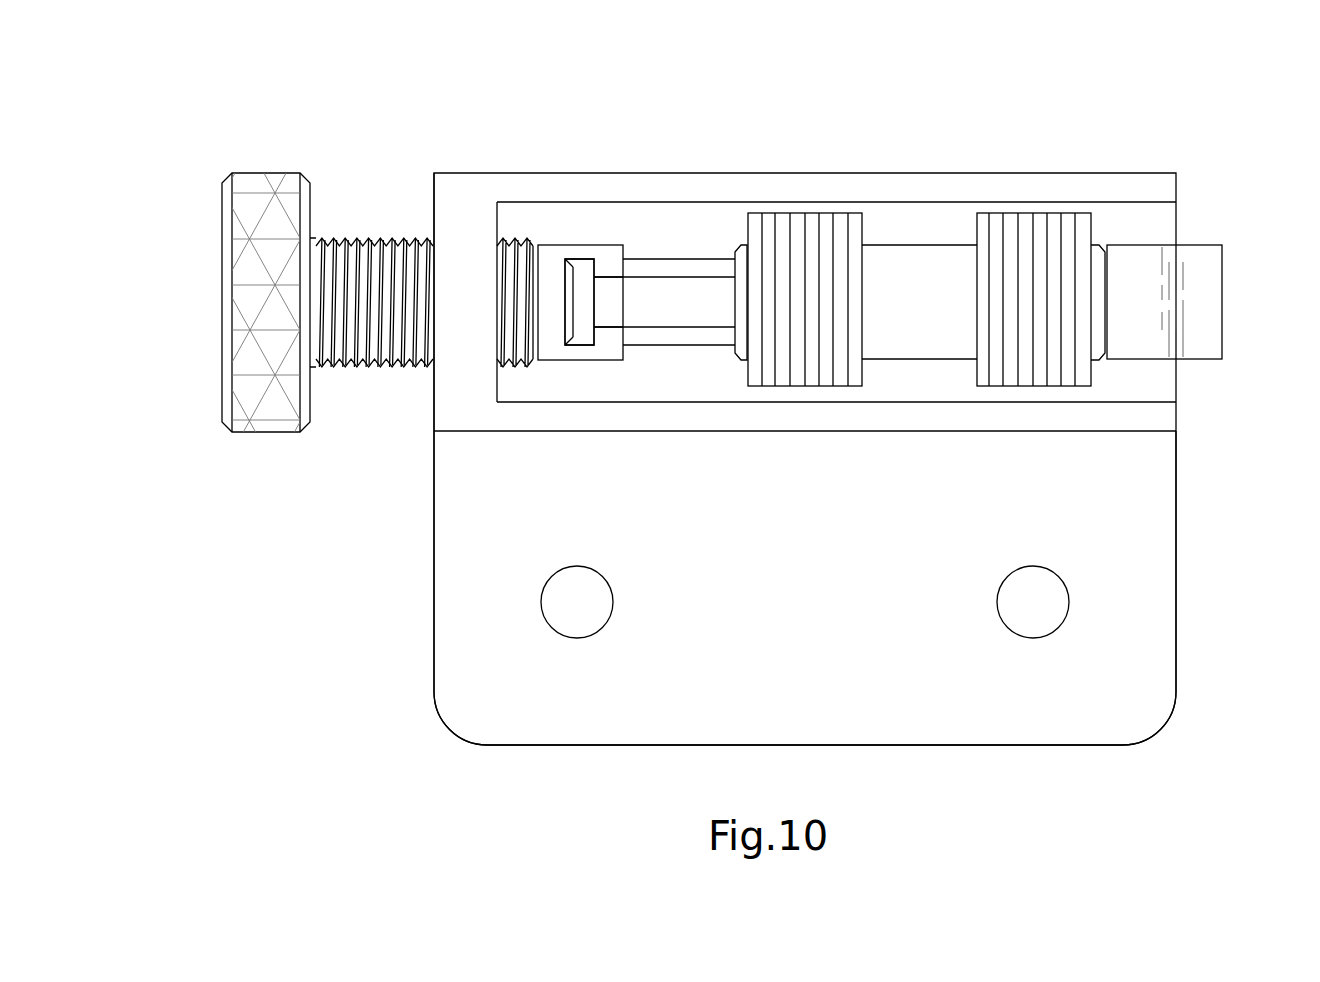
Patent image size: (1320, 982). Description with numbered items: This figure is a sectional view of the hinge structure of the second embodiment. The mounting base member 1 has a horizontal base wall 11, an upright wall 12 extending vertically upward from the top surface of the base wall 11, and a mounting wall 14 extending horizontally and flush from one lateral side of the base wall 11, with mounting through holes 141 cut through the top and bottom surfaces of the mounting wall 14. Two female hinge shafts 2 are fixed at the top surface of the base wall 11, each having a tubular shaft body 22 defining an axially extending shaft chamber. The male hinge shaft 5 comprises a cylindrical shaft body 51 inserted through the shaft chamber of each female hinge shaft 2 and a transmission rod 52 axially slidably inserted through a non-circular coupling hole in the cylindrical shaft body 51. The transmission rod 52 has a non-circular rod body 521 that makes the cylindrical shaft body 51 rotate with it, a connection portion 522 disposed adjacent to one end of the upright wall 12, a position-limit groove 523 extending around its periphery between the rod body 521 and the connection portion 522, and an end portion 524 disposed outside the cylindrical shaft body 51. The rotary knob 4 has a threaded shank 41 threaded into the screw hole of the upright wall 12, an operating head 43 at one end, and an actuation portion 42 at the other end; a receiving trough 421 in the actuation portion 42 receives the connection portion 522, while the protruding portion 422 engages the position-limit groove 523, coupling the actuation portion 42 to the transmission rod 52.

The mounting base member 1 is at (428, 560).
The horizontal base wall 11 is at (1165, 380).
The upright wall 12 is at (444, 233).
The mounting wall 14 is at (1150, 497).
The mounting through hole 141 is at (602, 627).
The female hinge shaft 2 is at (942, 246).
The tubular shaft body 22 is at (843, 222).
The rotary knob 4 is at (339, 284).
The threaded shank 41 is at (362, 240).
The actuation portion 42 is at (581, 314).
The receiving trough 421 is at (577, 252).
The protruding portion 422 is at (605, 268).
The operating head 43 is at (245, 296).
The male hinge shaft 5 is at (859, 315).
The cylindrical shaft body 51 is at (902, 348).
The transmission rod 52 is at (859, 319).
The non-circular rod body 521 is at (686, 290).
The connection portion 522 is at (580, 333).
The position-limit groove 523 is at (607, 310).
The end cap 524 is at (1198, 263).